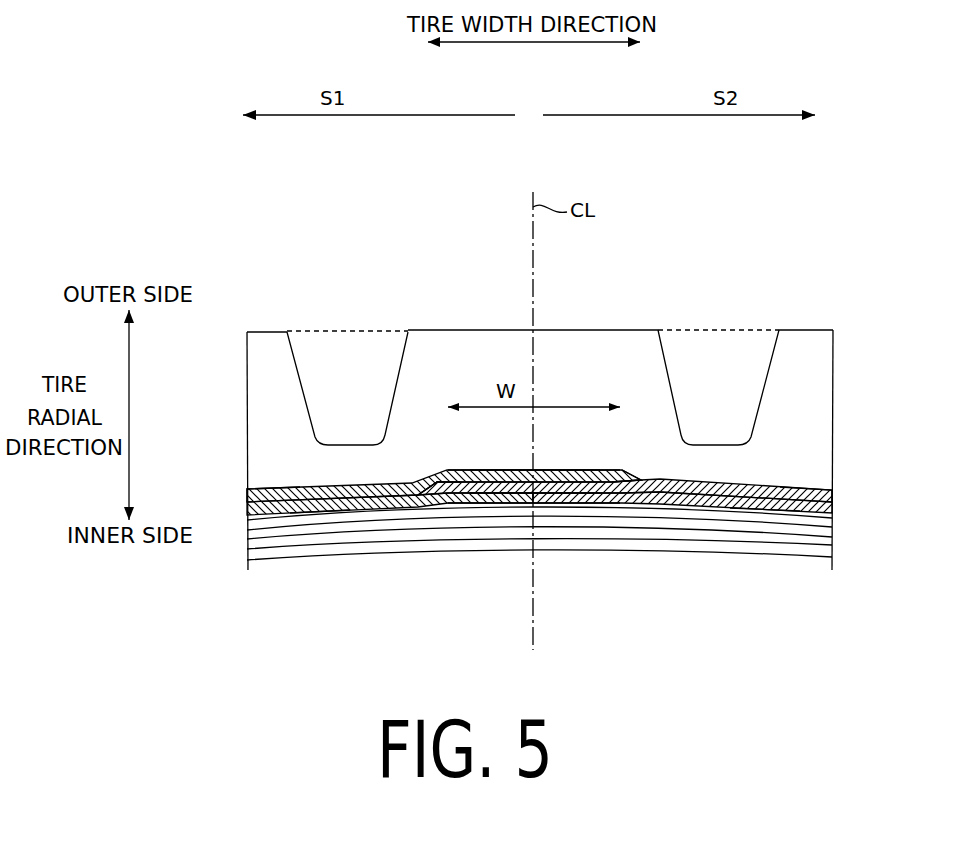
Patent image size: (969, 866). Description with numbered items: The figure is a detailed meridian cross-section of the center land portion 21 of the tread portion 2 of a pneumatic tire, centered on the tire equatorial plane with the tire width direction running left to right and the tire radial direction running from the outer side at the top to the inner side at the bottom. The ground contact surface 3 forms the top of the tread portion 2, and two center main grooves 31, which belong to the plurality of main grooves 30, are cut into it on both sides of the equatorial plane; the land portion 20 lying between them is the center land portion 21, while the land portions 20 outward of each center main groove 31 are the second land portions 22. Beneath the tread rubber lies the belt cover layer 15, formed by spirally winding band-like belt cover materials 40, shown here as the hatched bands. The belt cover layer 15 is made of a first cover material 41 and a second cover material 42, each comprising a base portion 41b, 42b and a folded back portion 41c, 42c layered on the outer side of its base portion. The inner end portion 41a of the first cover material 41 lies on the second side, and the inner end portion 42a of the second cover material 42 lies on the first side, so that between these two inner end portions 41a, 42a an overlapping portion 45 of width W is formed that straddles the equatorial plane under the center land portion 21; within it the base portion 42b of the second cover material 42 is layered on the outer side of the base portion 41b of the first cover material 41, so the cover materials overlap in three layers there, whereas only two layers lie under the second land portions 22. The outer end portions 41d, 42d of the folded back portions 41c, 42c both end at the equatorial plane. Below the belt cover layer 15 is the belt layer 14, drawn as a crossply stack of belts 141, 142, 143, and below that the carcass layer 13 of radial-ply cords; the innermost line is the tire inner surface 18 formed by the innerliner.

The tread portion 2 is at (360, 215).
The ground contact surface 3 is at (493, 329).
The carcass layer 13 is at (482, 539).
The belt layer 14 is at (728, 600).
The belt 141 is at (685, 528).
The belt 142 is at (612, 517).
The belt ply 143 is at (539, 557).
The belt cover layer 15 is at (700, 467).
The tire inner surface 18 is at (393, 558).
The land portions 20 is at (528, 299).
The center land portion 21 is at (602, 329).
The second land portion 22 is at (258, 330).
The main grooves 30 is at (533, 336).
The center main groove 31 is at (402, 352).
The belt cover material 40 is at (542, 523).
The first cover material 41 is at (292, 491).
The inner end portion 41a is at (627, 468).
The base portion 41b is at (318, 517).
The folded back portion 41c is at (305, 488).
The outer end portion 41d is at (533, 468).
The second cover material 42 is at (790, 488).
The inner end portion 42a is at (443, 467).
The base portion 42b is at (762, 513).
The folded back portion 42c is at (768, 488).
The outer end portion 42d is at (533, 468).
The overlapping portion 45 is at (620, 470).